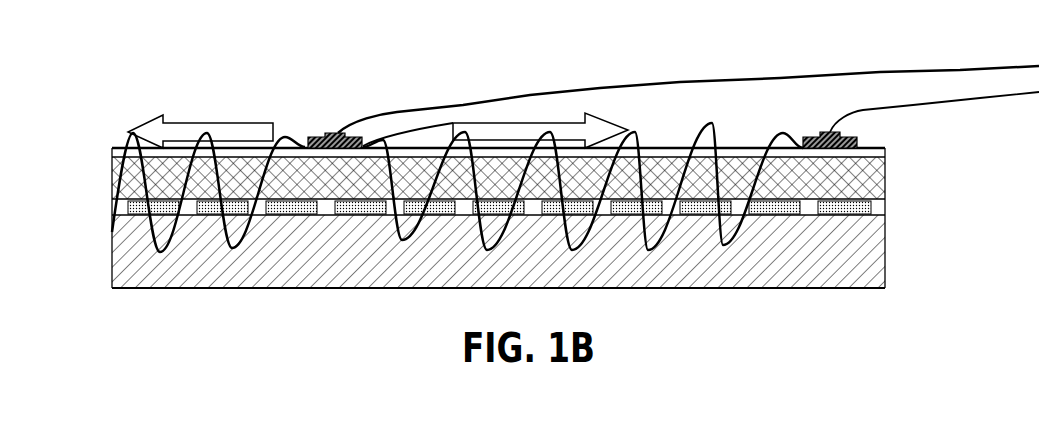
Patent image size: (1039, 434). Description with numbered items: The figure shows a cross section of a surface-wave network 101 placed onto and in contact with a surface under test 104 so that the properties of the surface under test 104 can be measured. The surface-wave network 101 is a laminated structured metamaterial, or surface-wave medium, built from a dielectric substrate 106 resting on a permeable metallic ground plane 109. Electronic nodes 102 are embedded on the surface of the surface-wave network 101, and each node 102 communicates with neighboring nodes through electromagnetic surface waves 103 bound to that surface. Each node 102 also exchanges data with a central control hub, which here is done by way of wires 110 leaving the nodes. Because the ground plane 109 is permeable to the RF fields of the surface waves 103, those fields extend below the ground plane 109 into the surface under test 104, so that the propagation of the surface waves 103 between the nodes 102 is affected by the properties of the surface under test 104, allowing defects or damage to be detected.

The surface-wave network 101 is at (562, 252).
The electronic node 102 is at (322, 133).
The electromagnetic surface waves 103 is at (719, 134).
The surface under test 104 is at (541, 251).
The dielectric substrate 106 is at (781, 190).
The permeable metallic ground plane 109 is at (840, 208).
The wires 110 is at (500, 99).